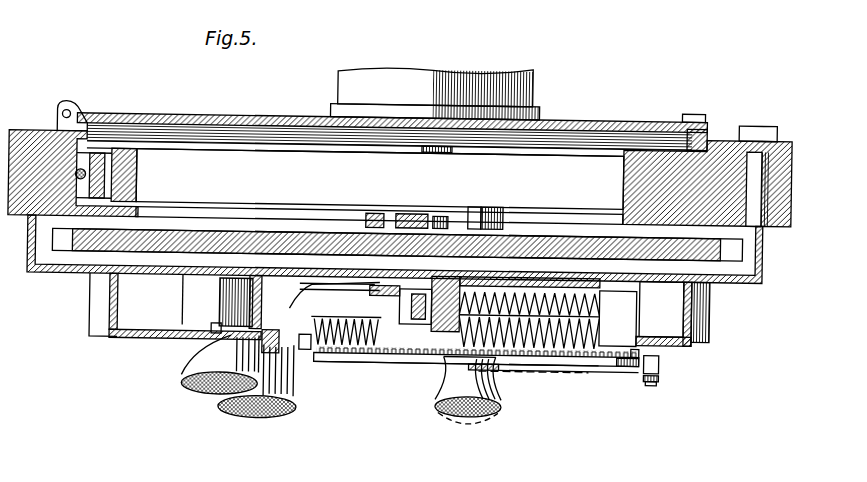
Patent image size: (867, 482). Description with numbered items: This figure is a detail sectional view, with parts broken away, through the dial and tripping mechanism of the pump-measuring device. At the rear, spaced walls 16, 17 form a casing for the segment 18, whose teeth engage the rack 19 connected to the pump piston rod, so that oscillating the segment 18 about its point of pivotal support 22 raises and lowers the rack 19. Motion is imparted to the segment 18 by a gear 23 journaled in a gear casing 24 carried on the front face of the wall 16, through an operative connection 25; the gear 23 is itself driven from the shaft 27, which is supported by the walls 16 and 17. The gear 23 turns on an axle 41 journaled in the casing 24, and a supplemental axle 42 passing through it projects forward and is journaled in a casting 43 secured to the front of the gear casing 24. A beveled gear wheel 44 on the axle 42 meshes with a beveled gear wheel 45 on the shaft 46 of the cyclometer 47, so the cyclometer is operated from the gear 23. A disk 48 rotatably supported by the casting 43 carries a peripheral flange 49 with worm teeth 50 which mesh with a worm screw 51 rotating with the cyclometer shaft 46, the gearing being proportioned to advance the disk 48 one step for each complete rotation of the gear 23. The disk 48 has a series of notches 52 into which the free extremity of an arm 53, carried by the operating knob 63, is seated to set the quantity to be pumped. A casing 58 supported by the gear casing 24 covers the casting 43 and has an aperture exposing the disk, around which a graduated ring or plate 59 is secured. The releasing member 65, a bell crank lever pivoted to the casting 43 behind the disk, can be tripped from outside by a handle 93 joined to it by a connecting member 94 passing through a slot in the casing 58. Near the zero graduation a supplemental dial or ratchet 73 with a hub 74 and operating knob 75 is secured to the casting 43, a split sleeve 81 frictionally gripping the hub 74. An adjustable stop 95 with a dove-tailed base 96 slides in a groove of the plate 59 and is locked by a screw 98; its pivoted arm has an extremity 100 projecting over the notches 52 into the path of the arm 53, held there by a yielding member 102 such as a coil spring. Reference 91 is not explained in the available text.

The spaced wall 16 is at (669, 207).
The spaced wall 17 is at (718, 129).
The segment 18 is at (255, 154).
The rack 19 is at (93, 155).
The point of pivotal support 22 is at (753, 149).
The gear 23 is at (499, 220).
The gear casing 24 is at (64, 273).
The operative connection 25 is at (477, 218).
The shaft 27 is at (446, 221).
The axle 41 is at (382, 279).
The supplemental axle 42 is at (397, 269).
The casting 43 is at (446, 314).
The gear wheel 44 is at (375, 287).
The gear wheel 45 is at (426, 322).
The cyclometer shaft 46 is at (545, 349).
The cyclometer 47 is at (629, 316).
The disk 48 is at (605, 352).
The peripheral flange 49 is at (345, 349).
The worm teeth 50 is at (346, 325).
The worm screw 51 is at (531, 302).
The notches 52 is at (351, 349).
The arm 53 is at (527, 352).
The casing 58 is at (120, 334).
The ring or plate 59 is at (303, 341).
The operating handle or knob 63 is at (462, 391).
The releasing member 65 is at (332, 278).
The supplemental dial or ratchet 73 is at (290, 362).
The hub 74 is at (229, 355).
The operating knob or handle 75 is at (260, 407).
The split sleeve or holder 81 is at (300, 296).
The sleeve 91 is at (272, 370).
The handle or knob 93 is at (201, 367).
The connecting portion or member 94 is at (216, 324).
The stop 95 is at (659, 354).
The dove-tailed base 96 is at (696, 317).
The screw 98 is at (653, 368).
The extremity 100 is at (625, 351).
The yielding member 102 is at (639, 348).